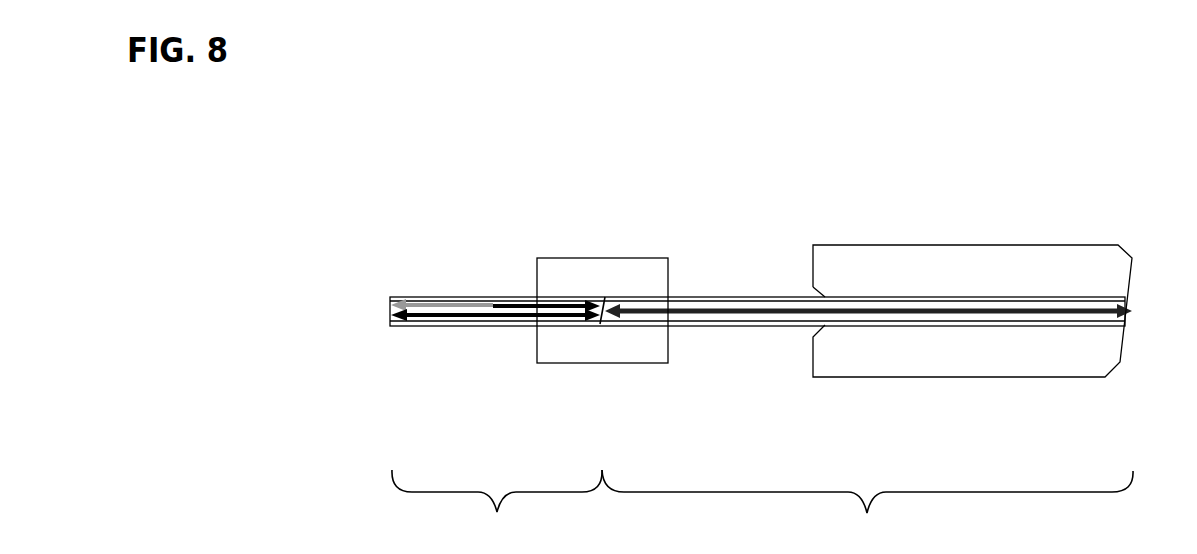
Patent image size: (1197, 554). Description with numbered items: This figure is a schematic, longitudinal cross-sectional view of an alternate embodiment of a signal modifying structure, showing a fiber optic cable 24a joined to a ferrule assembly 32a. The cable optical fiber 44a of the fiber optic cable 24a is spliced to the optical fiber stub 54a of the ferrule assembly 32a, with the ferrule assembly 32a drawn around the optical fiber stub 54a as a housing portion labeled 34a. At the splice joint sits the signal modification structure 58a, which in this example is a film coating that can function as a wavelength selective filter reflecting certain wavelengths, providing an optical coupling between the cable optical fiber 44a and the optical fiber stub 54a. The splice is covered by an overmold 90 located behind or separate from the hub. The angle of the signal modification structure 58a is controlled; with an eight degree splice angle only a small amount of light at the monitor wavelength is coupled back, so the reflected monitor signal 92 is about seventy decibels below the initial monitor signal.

The fiber optic cable 24a is at (497, 504).
The ferrule assembly 32a is at (867, 507).
The housing 34a is at (1000, 253).
The cable optical fiber 44a is at (430, 296).
The optical fiber stub 54a is at (751, 320).
The signal modification structure 58a is at (616, 290).
The overmold 90 is at (542, 276).
The reflected monitor signal 92 is at (446, 315).